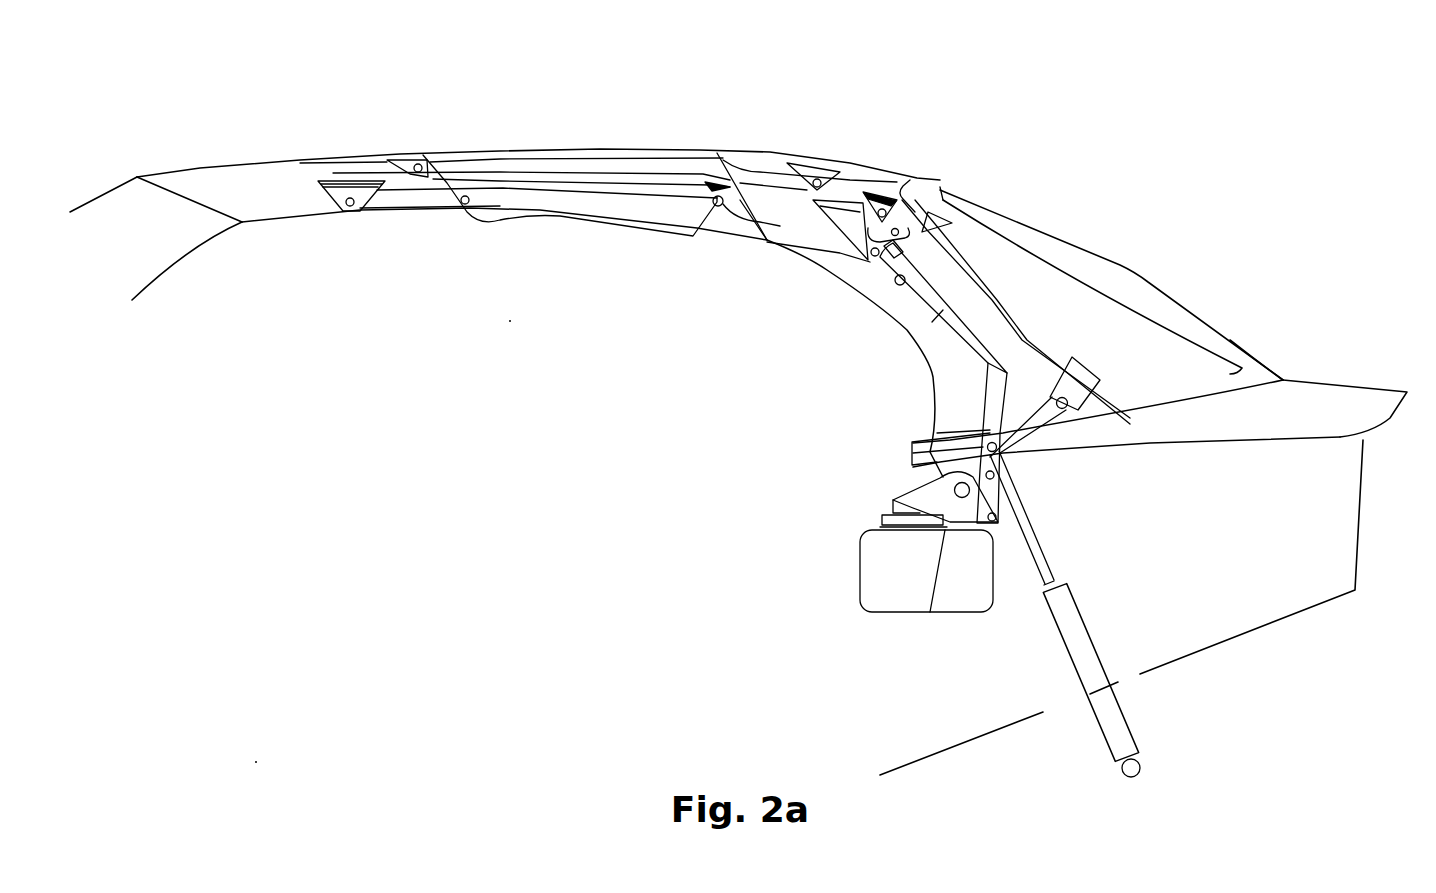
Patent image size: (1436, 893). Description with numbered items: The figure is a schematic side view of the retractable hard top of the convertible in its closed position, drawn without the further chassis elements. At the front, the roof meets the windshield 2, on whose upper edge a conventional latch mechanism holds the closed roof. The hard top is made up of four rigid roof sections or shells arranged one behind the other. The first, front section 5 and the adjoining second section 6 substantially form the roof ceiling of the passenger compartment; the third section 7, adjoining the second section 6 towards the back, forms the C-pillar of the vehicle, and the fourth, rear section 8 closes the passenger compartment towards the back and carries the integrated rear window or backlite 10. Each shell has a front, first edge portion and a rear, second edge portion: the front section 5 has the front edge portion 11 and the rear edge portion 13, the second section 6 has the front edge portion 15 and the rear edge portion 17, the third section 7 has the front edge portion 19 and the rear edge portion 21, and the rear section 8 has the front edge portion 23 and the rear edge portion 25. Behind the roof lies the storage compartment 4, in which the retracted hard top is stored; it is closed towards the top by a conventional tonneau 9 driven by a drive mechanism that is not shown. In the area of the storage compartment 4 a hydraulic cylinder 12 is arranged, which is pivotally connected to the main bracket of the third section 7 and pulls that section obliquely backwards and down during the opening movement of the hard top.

The windshield 2 is at (120, 235).
The front, first edge portion 11 is at (188, 180).
The first, front section 5 is at (305, 177).
The rear, second edge portion 13 is at (400, 152).
The front, first edge portion 15 is at (455, 153).
The second section 6 is at (592, 150).
The rear, second edge portion 17 is at (695, 150).
The front, first edge portion 19 is at (743, 150).
The third section 7 is at (863, 177).
The front, first edge portion 23 is at (933, 187).
The rear window or backlite 10 is at (1053, 243).
The fourth, rear section 8 is at (1083, 318).
The rear, second edge portion 25 is at (1240, 380).
The rear, second edge portion 21 is at (1017, 413).
The tonneau 9 is at (1298, 395).
The storage compartment 4 is at (1312, 515).
The hydraulic cylinder 12 is at (1107, 707).